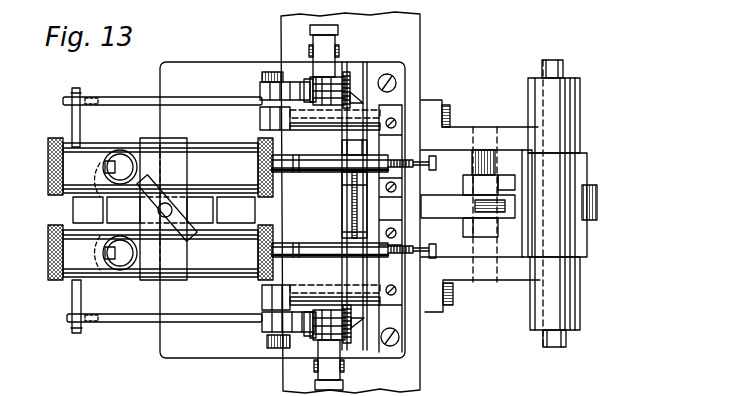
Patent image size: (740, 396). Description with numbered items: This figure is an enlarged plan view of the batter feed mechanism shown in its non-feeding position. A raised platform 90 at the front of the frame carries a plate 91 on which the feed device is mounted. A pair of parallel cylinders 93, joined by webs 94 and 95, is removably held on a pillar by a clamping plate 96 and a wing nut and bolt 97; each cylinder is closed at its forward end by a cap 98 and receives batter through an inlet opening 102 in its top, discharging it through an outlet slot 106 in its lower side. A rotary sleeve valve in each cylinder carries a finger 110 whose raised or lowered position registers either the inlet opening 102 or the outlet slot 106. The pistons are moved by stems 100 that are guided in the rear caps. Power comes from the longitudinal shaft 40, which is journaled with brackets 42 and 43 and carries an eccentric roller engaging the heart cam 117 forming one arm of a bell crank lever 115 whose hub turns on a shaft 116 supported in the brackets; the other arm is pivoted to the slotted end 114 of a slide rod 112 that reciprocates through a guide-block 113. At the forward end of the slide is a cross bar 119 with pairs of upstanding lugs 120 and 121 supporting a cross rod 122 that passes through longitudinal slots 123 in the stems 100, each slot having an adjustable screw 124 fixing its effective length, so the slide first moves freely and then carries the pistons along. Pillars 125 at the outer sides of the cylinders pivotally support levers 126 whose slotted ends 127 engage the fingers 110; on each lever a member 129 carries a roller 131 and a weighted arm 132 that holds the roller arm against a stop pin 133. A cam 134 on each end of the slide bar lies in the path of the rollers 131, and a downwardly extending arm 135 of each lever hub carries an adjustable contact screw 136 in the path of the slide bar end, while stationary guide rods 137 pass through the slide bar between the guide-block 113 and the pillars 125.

The longitudinal shaft 40 is at (565, 74).
The bracket 42 is at (457, 277).
The bracket 43 is at (458, 126).
The raised platform 90 is at (418, 369).
The plate 91 is at (176, 352).
The cylinders 93 is at (101, 155).
The web 94 is at (78, 212).
The web 95 is at (249, 212).
The clamping plate 96 is at (178, 148).
The wing nut and bolt 97 is at (185, 212).
The cap 98 is at (52, 175).
The stem 100 is at (291, 173).
The inlet opening 102 is at (138, 292).
The outlet slot 106 is at (120, 146).
The finger 110 is at (72, 122).
The slide rod 112 is at (468, 206).
The guide-block 113 is at (398, 272).
The slotted end 114 is at (484, 186).
The bell crank lever 115 is at (490, 224).
The shaft 116 is at (497, 160).
The heart cam 117 is at (597, 207).
The cross bar 119 is at (352, 215).
The upstanding lugs 120 is at (346, 150).
The upstanding lugs 121 is at (346, 240).
The cross rod 122 is at (342, 198).
The longitudinal slots 123 is at (296, 157).
The adjustable screw 124 is at (421, 156).
The pillars 125 is at (262, 120).
The lever 126 is at (133, 102).
The slotted end 127 is at (93, 100).
The member 129 is at (311, 80).
The roller 131 is at (346, 73).
The weighted arm 132 is at (334, 37).
The stop pin 133 is at (302, 113).
The cam 134 is at (352, 96).
The downwardly extending arm 135 is at (262, 85).
The adjustable contact screw 136 is at (306, 80).
The stationary guide rods 137 is at (300, 126).